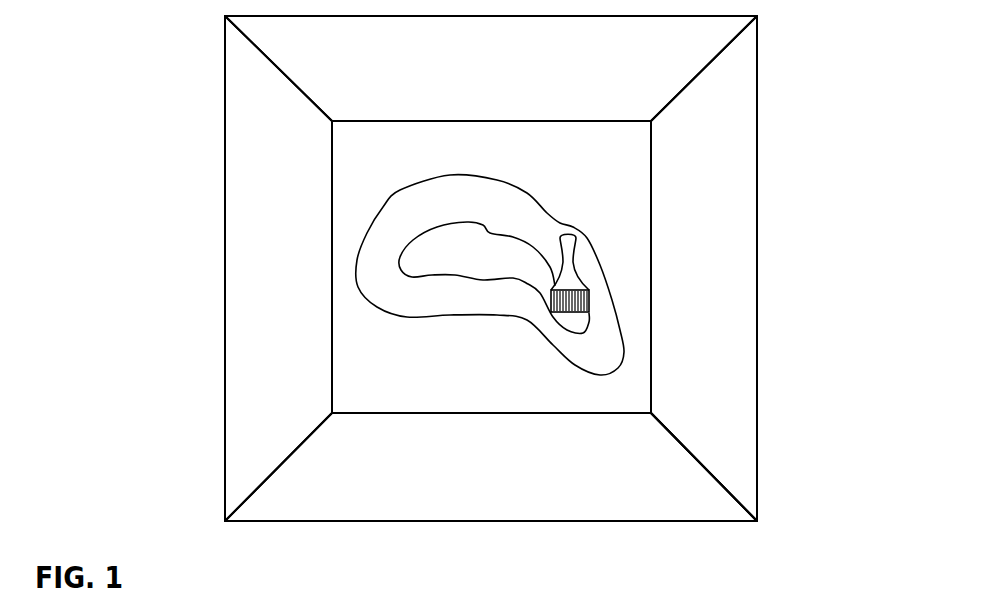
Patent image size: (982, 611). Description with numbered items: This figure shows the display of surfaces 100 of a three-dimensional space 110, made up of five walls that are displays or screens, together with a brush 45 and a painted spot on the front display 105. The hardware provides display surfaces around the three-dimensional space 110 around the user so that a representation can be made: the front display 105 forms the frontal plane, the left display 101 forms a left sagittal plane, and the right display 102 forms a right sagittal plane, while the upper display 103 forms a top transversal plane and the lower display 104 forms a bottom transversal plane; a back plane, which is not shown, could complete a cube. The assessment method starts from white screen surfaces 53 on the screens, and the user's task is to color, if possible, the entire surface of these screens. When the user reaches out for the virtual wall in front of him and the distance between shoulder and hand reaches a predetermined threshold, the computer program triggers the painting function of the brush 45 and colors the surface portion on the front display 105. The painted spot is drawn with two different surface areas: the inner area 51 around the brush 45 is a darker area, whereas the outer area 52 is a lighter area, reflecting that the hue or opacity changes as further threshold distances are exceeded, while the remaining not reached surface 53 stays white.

The display of surfaces 100 is at (500, 120).
The left display 101 is at (280, 305).
The right display 102 is at (695, 318).
The upper display 103 is at (370, 90).
The lower display 104 is at (338, 482).
The front display 105 is at (625, 402).
The 3D space 110 is at (383, 372).
The brush 45 is at (572, 288).
The inner area 51 is at (413, 250).
The outer area 52 is at (558, 220).
The white screen surface 53 is at (498, 363).